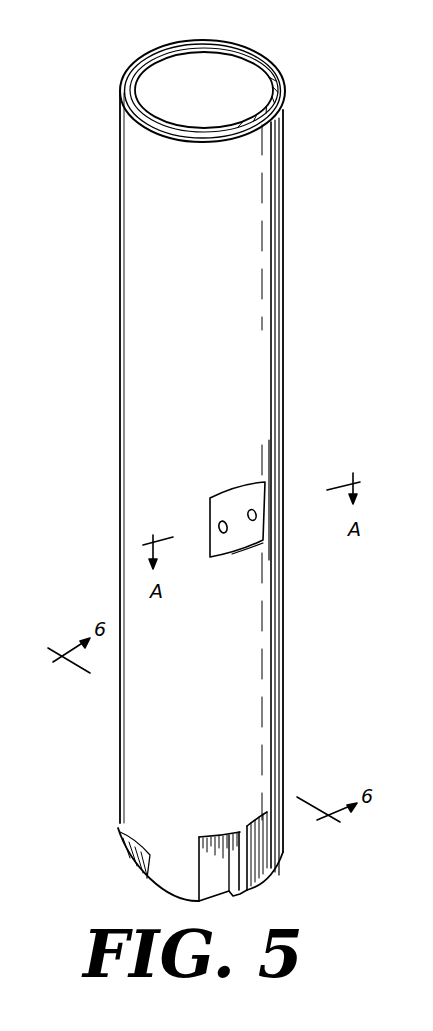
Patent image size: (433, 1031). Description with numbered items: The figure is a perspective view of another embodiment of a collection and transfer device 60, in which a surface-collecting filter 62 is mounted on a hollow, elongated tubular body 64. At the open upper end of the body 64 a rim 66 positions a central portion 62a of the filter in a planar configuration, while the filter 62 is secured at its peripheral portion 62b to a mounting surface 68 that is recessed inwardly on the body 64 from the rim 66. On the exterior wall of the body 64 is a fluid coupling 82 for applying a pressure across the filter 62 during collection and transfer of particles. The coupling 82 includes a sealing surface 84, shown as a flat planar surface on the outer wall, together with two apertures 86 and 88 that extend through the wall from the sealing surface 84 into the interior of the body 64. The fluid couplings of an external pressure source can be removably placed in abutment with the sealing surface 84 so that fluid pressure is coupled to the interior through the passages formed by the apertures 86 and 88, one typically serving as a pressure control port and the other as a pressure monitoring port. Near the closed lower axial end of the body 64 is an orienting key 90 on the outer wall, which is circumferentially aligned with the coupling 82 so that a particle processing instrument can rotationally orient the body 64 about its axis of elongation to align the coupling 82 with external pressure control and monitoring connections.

The collection and transfer device 60 is at (108, 492).
The surface-collecting filter 62 is at (252, 72).
The central portion of the filter 62a is at (211, 91).
The peripheral portion of the filter 62b is at (282, 100).
The tubular body 64 is at (284, 253).
The rim 66 is at (215, 48).
The mounting surface 68 is at (282, 80).
The fluid coupling 82 is at (275, 492).
The sealing surface 84 is at (228, 544).
The aperture 86 is at (223, 521).
The aperture 88 is at (257, 516).
The orienting key 90 is at (250, 888).